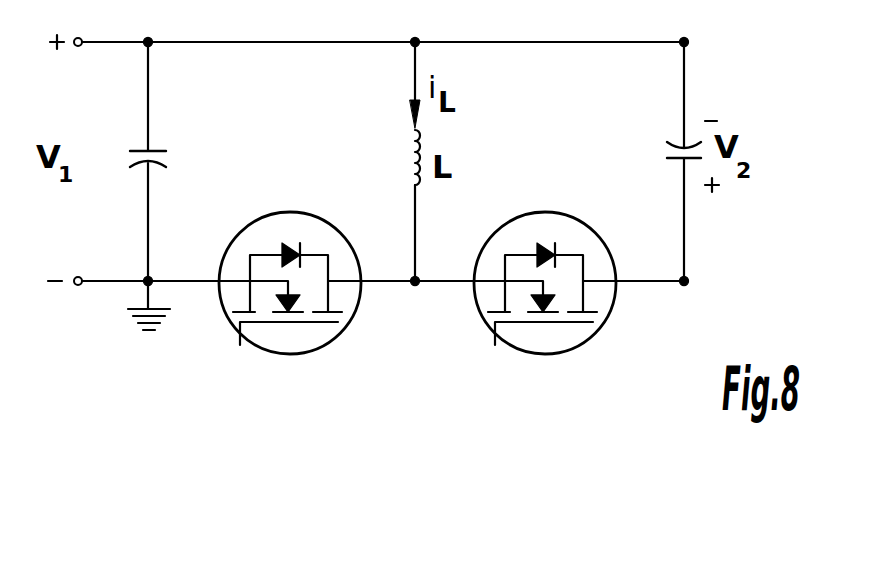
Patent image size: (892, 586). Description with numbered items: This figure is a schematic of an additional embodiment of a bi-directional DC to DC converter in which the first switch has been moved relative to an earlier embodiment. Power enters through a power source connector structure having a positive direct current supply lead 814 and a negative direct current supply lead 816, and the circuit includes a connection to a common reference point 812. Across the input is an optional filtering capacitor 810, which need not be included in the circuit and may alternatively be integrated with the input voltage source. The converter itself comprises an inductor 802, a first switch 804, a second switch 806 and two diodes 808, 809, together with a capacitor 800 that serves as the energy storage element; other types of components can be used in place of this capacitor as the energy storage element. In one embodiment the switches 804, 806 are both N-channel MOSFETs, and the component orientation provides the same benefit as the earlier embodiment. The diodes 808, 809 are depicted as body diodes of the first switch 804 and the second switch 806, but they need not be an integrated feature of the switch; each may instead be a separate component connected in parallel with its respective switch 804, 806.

The capacitor (C2) 800 is at (678, 142).
The inductor (L) 802 is at (422, 133).
The switch (S1) 804 is at (323, 349).
The switch (S2) 806 is at (578, 349).
The diode 808 is at (282, 247).
The diode 809 is at (538, 243).
The filtering capacitor (C1) 810 is at (155, 147).
The common reference point 812 is at (132, 324).
The positive direct current supply lead 814 is at (82, 38).
The negative direct current supply lead 816 is at (78, 285).